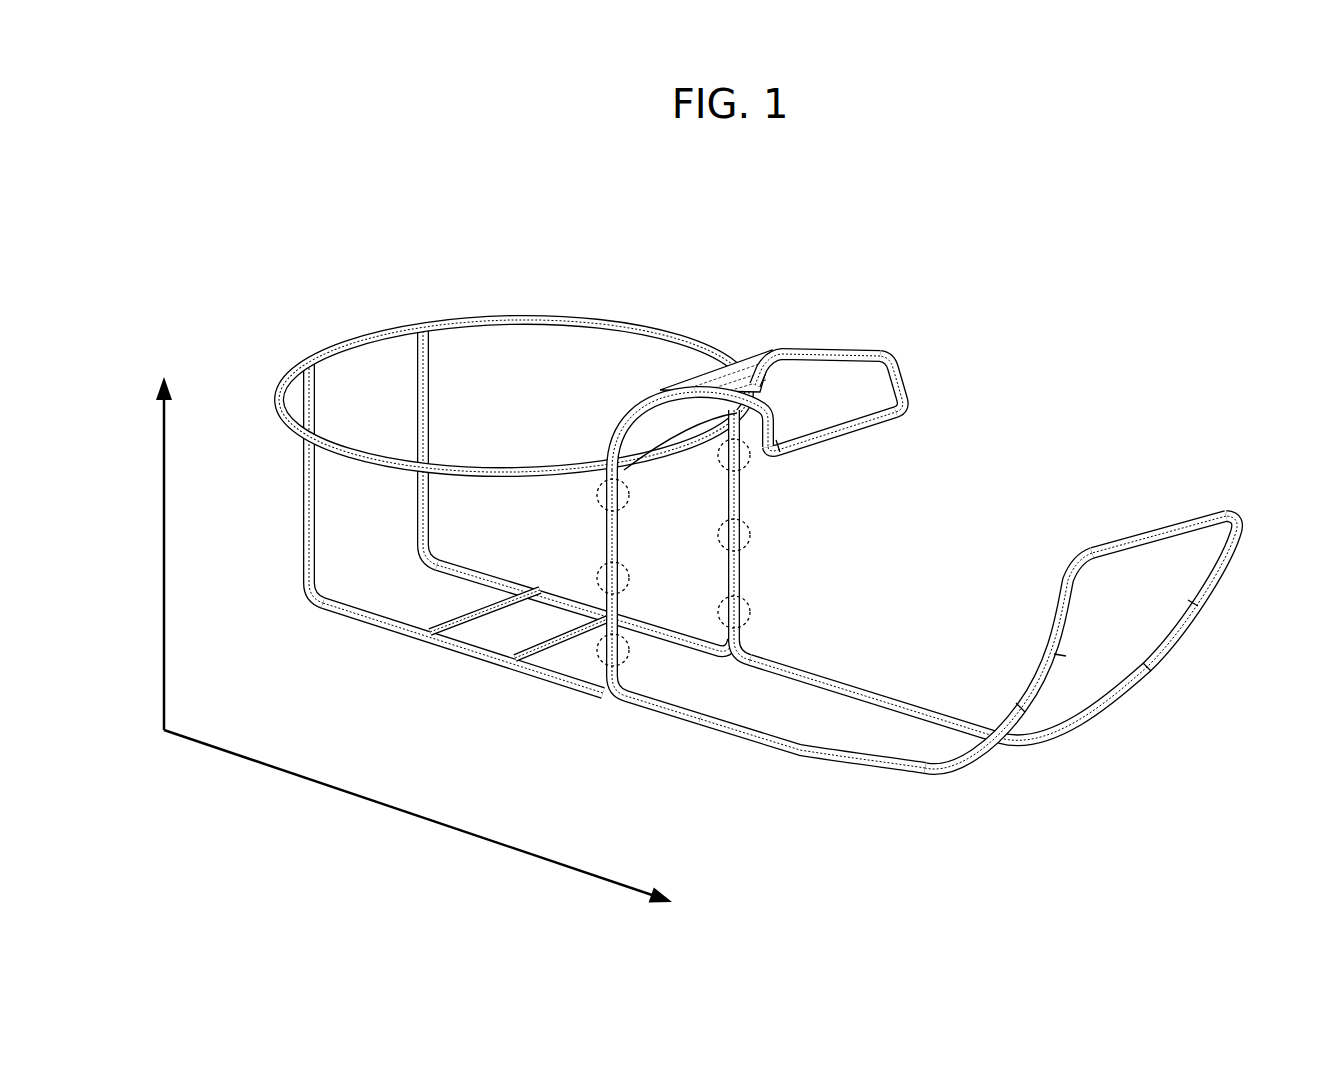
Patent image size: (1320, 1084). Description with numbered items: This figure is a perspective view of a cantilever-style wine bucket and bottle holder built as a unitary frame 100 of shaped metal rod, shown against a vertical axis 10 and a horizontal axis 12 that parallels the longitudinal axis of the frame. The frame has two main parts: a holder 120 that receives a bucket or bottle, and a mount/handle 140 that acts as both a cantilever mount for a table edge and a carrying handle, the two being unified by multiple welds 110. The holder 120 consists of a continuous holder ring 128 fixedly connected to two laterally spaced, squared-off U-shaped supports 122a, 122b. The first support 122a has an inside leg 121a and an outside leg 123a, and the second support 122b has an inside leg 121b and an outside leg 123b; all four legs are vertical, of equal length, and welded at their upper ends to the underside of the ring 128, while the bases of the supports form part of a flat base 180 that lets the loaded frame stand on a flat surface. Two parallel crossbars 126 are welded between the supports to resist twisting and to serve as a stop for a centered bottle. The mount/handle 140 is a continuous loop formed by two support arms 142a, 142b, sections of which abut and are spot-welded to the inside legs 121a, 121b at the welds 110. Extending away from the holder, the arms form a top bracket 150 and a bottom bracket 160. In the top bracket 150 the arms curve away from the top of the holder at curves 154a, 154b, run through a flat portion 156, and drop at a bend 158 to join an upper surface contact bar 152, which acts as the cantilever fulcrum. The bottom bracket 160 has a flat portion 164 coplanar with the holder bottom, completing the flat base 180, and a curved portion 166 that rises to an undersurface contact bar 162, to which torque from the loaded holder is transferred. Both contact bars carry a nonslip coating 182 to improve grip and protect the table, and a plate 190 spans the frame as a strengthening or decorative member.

The unitary frame 100 is at (716, 204).
The vertical axis 10 is at (167, 422).
The horizontal axis 12 is at (487, 843).
The welds 110 is at (710, 468).
The holder 120 is at (312, 265).
The inside leg 121a is at (598, 637).
The inside leg 121b is at (855, 596).
The first support 122a is at (327, 603).
The second support 122b is at (433, 426).
The outside leg 123a is at (302, 488).
The outside leg 123b is at (417, 440).
The crossbars 126 is at (564, 618).
The holder ring 128 is at (538, 312).
The mount/handle 140 is at (1116, 268).
The support arm 142a is at (780, 735).
The support arm 142b is at (823, 366).
The top bracket 150 is at (871, 399).
The upper surface contact bar 152 is at (877, 427).
The curve 154a is at (603, 458).
The curve 154b is at (647, 398).
The flat portion 156 is at (738, 311).
The bend 158 is at (905, 352).
The bottom bracket 160 is at (937, 650).
The undersurface contact bar 162 is at (1169, 480).
The flat portion 164 is at (703, 731).
The curved portion 166 is at (1085, 605).
The flat base 180 is at (660, 723).
The nonslip coating 182 is at (1120, 552).
The plate 190 is at (703, 377).